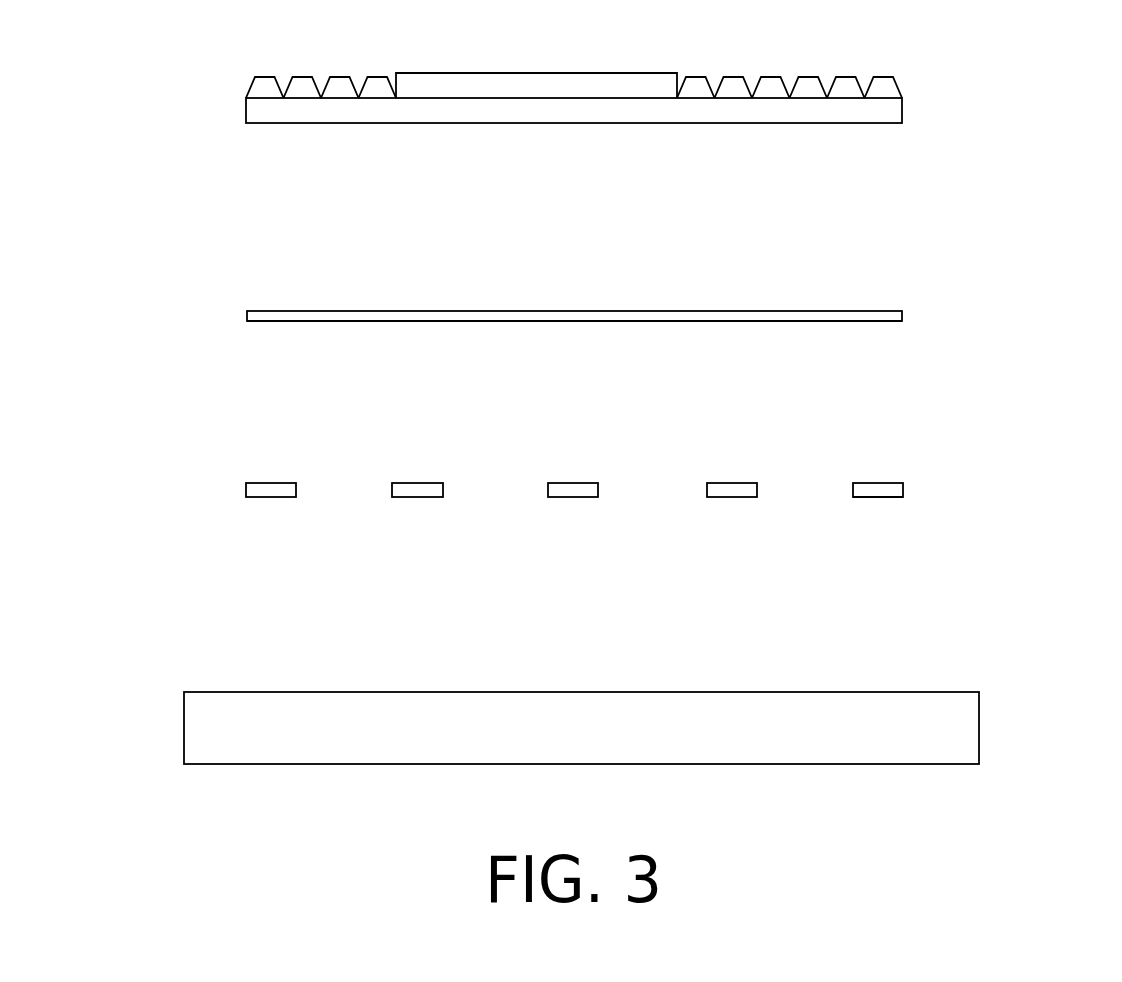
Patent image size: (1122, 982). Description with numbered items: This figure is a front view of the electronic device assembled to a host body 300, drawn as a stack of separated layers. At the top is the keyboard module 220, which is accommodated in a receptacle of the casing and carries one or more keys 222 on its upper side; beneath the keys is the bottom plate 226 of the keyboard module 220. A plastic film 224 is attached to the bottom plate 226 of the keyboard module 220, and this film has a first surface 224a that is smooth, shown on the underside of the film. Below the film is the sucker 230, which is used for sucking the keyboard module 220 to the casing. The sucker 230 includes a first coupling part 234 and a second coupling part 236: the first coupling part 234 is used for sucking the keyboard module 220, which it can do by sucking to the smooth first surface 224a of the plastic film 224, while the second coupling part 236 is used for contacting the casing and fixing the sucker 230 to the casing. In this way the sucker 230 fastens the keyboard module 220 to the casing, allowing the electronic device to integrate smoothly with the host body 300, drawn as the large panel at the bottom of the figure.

The keyboard module 220 is at (674, 94).
The keys 222 is at (890, 87).
The bottom plate 226 is at (863, 115).
The plastic film 224 is at (912, 316).
The first surface 224a is at (848, 322).
The sucker 230 is at (670, 495).
The first coupling part 234 is at (880, 483).
The second coupling part 236 is at (880, 497).
The host body 300 is at (979, 728).